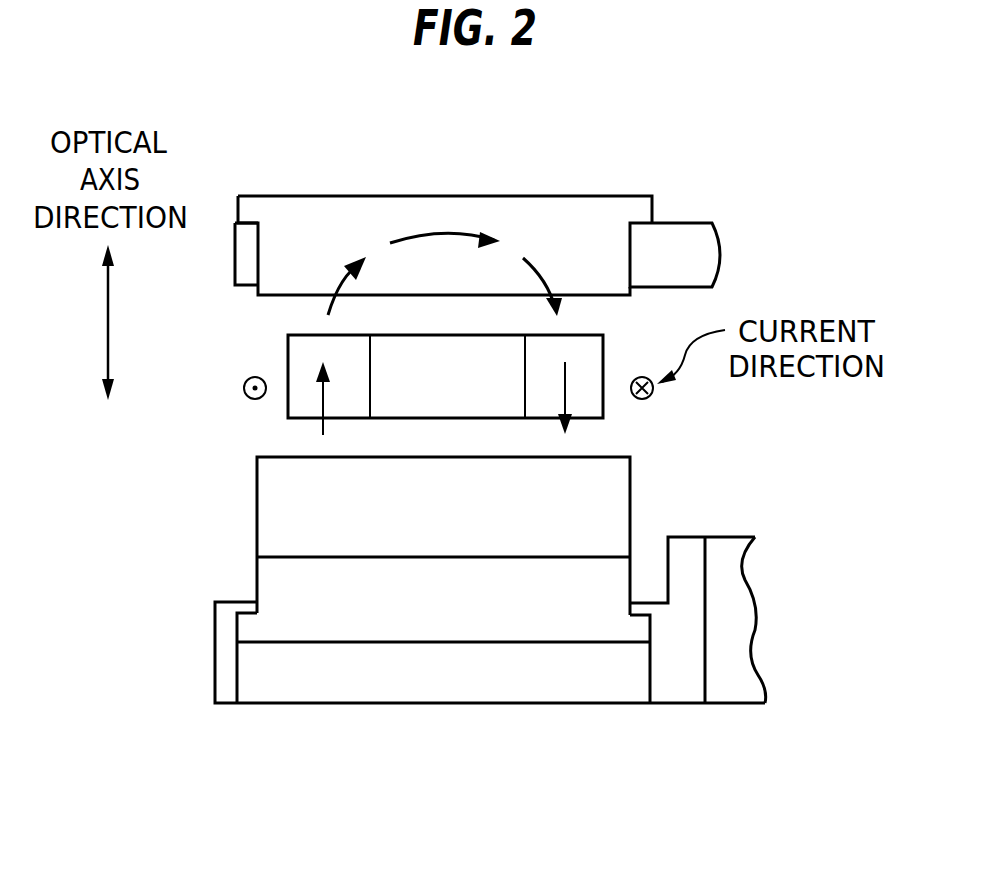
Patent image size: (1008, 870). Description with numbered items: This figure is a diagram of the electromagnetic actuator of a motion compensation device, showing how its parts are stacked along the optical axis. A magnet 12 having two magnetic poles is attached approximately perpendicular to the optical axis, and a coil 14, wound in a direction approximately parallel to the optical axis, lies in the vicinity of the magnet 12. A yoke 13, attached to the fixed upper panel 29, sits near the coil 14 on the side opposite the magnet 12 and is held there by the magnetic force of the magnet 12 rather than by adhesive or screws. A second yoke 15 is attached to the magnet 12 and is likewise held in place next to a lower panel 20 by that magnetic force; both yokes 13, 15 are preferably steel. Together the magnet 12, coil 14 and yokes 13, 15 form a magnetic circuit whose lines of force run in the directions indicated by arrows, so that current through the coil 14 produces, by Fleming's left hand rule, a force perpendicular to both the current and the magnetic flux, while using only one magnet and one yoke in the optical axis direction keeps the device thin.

The magnet 12 is at (610, 492).
The yoke 13 is at (578, 230).
The coil 14 is at (588, 399).
The yoke 15 is at (287, 582).
The lower panel 20 is at (680, 682).
The fixed upper panel 29 is at (703, 268).